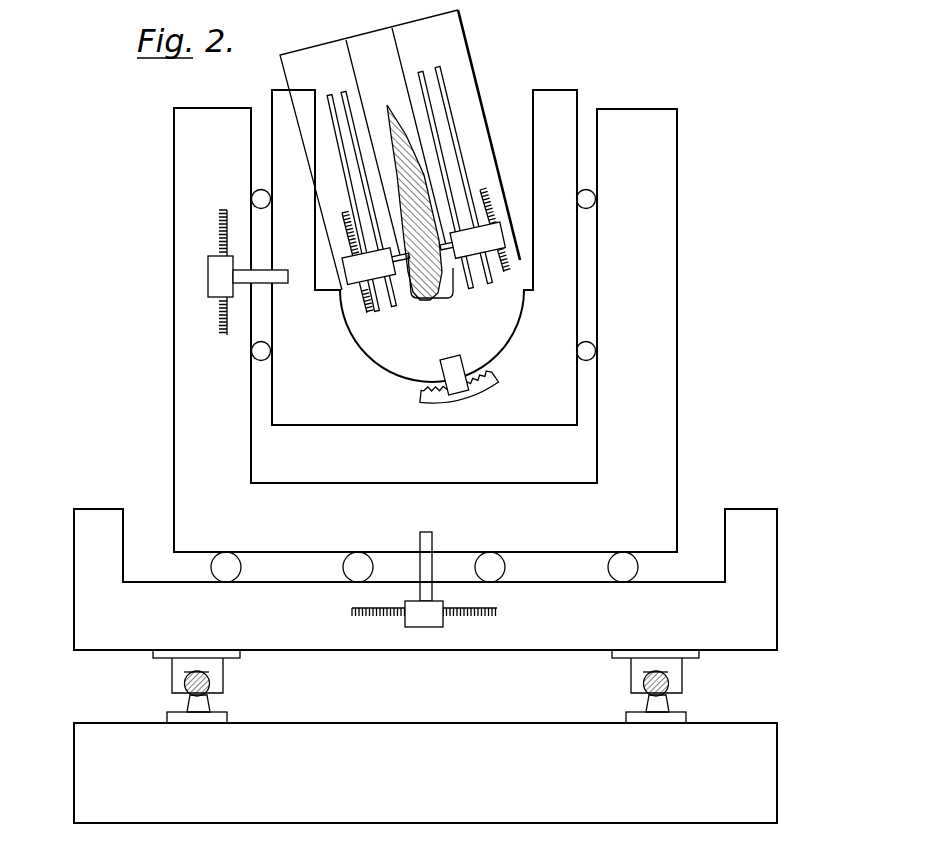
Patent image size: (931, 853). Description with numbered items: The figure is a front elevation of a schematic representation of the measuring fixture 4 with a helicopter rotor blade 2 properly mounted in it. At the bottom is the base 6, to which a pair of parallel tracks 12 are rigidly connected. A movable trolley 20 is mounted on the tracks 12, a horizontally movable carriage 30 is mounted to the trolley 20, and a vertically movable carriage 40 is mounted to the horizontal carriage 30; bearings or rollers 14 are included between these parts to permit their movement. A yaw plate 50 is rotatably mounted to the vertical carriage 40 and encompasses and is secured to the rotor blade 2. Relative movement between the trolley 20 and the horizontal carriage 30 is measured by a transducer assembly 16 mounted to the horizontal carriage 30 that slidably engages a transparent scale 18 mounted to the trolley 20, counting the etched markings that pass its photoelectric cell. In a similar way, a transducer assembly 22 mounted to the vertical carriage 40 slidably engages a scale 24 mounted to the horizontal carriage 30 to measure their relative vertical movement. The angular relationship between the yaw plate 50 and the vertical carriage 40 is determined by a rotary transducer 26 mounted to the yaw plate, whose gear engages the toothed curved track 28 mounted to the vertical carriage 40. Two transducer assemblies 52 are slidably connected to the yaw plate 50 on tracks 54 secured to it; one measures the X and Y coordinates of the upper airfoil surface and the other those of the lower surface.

The helicopter rotor blade 2 is at (432, 282).
The fixture 4 is at (52, 630).
The base 6 is at (776, 767).
The parallel tracks 12 is at (206, 681).
The bearings or rollers 14 is at (254, 196).
The transducer assembly 16 is at (424, 540).
The scale 18 is at (470, 616).
The trolley 20 is at (766, 567).
The transducer assembly 22 is at (282, 271).
The scale 24 is at (217, 313).
The rotary transducer 26 is at (455, 358).
The curved track 28 is at (486, 388).
The horizontally movable carriage 30 is at (660, 301).
The vertically movable carriage 40 is at (557, 95).
The yaw plate 50 is at (447, 30).
The transducer assemblies 52 is at (503, 235).
The tracks 54 is at (343, 94).